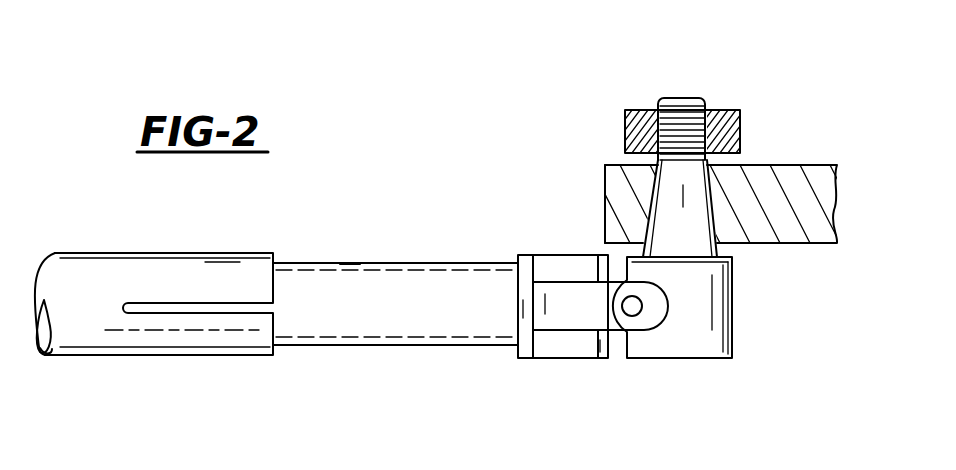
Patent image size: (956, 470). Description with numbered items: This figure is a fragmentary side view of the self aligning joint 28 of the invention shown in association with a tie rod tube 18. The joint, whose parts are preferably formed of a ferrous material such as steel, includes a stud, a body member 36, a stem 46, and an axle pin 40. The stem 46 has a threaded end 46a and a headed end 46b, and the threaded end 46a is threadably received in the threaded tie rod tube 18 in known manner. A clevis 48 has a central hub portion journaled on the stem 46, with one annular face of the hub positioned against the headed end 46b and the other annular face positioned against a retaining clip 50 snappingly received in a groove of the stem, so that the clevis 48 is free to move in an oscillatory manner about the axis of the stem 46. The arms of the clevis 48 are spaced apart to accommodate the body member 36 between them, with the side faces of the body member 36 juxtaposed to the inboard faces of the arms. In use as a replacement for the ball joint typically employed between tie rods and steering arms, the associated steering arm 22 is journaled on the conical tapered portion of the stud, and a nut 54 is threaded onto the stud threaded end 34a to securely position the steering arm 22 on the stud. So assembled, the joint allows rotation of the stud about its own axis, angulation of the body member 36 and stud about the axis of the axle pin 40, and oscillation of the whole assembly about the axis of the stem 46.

The tie rod tube 18 is at (110, 266).
The steering arm 22 is at (797, 247).
The self aligning joint 28 is at (604, 214).
The cylindrical threaded end portion 34a is at (690, 99).
The body member 36 is at (736, 318).
The axle pin 40 is at (641, 313).
The stem 46 is at (447, 254).
The threaded end 46a is at (348, 262).
The headed end 46b is at (605, 359).
The clevis 48 is at (558, 359).
The retaining clip 50 is at (528, 256).
The nut 54 is at (737, 140).